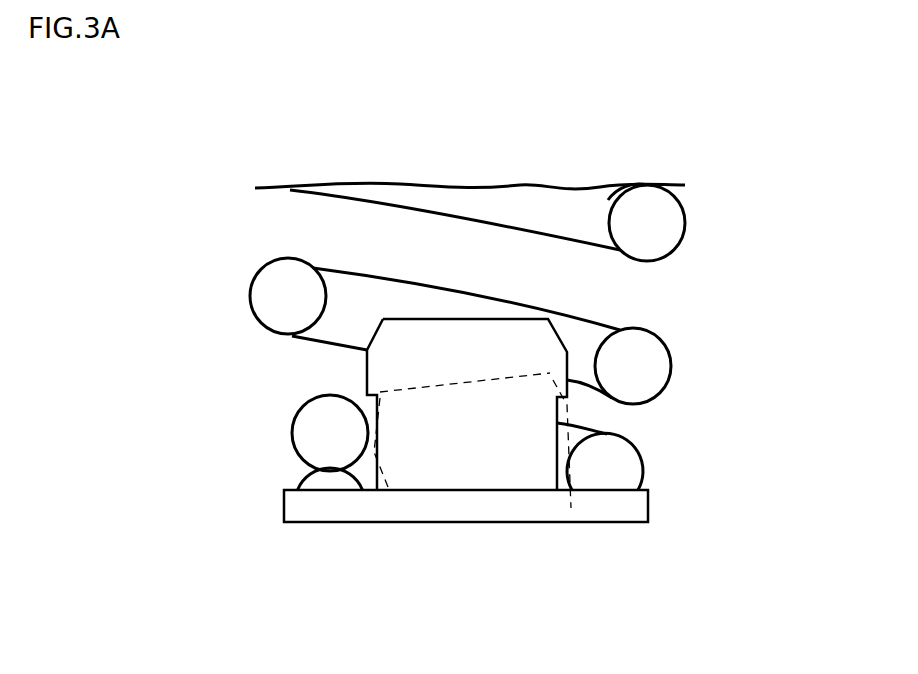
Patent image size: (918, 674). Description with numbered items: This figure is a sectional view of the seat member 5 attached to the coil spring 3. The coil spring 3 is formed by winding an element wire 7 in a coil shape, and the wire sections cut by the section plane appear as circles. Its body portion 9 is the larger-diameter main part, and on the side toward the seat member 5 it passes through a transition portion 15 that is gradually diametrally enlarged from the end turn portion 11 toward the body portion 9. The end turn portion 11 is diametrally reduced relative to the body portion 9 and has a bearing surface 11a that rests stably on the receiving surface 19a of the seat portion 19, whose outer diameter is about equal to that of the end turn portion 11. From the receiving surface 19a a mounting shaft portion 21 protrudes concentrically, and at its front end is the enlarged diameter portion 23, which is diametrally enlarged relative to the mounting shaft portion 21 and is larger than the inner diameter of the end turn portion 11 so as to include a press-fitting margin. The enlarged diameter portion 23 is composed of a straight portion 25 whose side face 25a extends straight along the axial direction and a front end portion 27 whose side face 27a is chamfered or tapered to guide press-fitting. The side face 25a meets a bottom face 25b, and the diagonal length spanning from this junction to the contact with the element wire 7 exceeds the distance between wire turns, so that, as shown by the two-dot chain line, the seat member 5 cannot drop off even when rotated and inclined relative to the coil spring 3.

The coil spring 3 is at (648, 176).
The seat member 5 is at (381, 497).
The element wire 7 is at (623, 203).
The body portion 9 is at (460, 200).
The end turn portion 11 is at (648, 470).
The bearing surface 11a is at (312, 492).
The transition portion 15 is at (655, 333).
The seat portion 19 is at (623, 510).
The receiving surface 19a is at (290, 487).
The mounting shaft portion 21 is at (525, 448).
The enlarged diameter portion 23 is at (550, 315).
The straight portion 25 is at (570, 348).
The side face 25a is at (367, 368).
The bottom face 25b is at (370, 406).
The front end portion 27 is at (420, 333).
The side face 27a is at (360, 340).